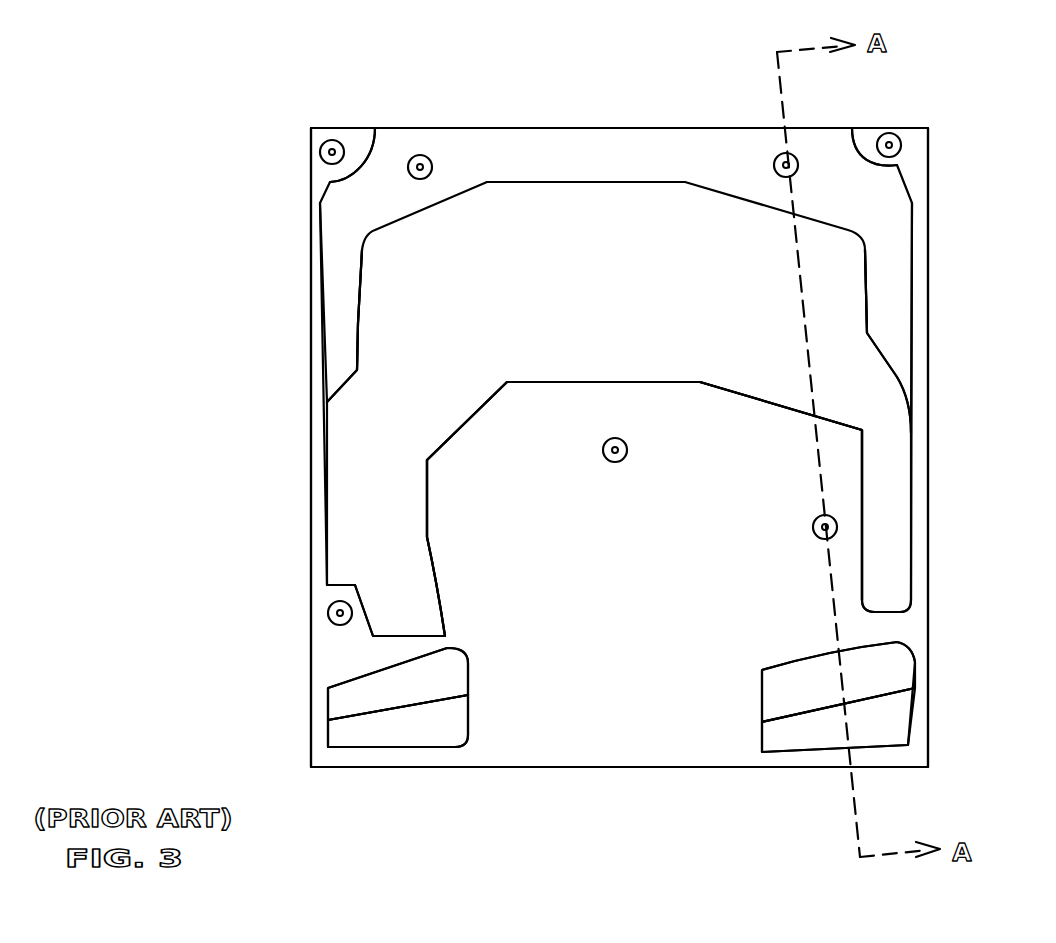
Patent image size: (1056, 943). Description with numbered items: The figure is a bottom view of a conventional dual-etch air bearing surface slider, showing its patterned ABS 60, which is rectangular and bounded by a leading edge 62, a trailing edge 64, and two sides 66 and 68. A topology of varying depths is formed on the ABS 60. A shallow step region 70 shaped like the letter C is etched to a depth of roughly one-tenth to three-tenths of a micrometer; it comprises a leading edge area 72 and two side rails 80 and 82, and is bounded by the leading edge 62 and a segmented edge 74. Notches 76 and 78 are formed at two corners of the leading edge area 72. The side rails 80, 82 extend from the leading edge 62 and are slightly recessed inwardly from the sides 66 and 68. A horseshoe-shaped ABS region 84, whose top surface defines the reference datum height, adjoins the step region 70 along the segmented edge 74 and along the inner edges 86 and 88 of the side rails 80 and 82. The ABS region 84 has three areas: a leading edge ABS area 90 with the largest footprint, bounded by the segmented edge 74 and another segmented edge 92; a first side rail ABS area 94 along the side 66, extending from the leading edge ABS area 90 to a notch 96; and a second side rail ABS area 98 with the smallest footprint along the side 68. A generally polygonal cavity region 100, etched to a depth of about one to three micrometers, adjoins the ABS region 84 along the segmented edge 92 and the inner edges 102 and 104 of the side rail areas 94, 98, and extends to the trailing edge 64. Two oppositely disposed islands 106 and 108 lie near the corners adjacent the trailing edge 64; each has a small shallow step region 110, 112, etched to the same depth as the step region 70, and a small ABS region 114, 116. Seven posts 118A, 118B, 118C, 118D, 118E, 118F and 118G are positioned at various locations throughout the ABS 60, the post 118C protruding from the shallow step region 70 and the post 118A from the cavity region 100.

The patterned ABS 60 is at (619, 400).
The leading edge 62 is at (723, 128).
The trailing edge 64 is at (672, 770).
The side 66 is at (310, 428).
The side 68 is at (930, 408).
The shallow step region 70 is at (613, 155).
The leading edge area 72 is at (490, 153).
The segmented edge 74 is at (597, 195).
The notch 76 is at (353, 141).
The notch 78 is at (867, 139).
The side rail 80 is at (333, 268).
The side rail 82 is at (900, 292).
The ABS region 84 is at (619, 307).
The inner edge 86 is at (374, 337).
The inner edge 88 is at (847, 298).
The leading edge ABS area 90 is at (594, 340).
The segmented edge 92 is at (555, 380).
The first side rail ABS area 94 is at (343, 527).
The notch 96 is at (355, 627).
The second side rail ABS area 98 is at (905, 537).
The cavity region 100 is at (644, 509).
The inner edge 102 is at (427, 537).
The inner edge 104 is at (863, 557).
The island 106 is at (484, 696).
The island 108 is at (747, 720).
The small shallow step region 110 is at (398, 684).
The small shallow step region 112 is at (838, 682).
The small ABS region 114 is at (398, 721).
The small ABS region 116 is at (838, 720).
The post 118A is at (837, 524).
The post 118B is at (901, 143).
The post 118C is at (787, 153).
The post 118D is at (418, 155).
The post 118E is at (320, 152).
The post 118F is at (328, 610).
The post 118G is at (615, 462).